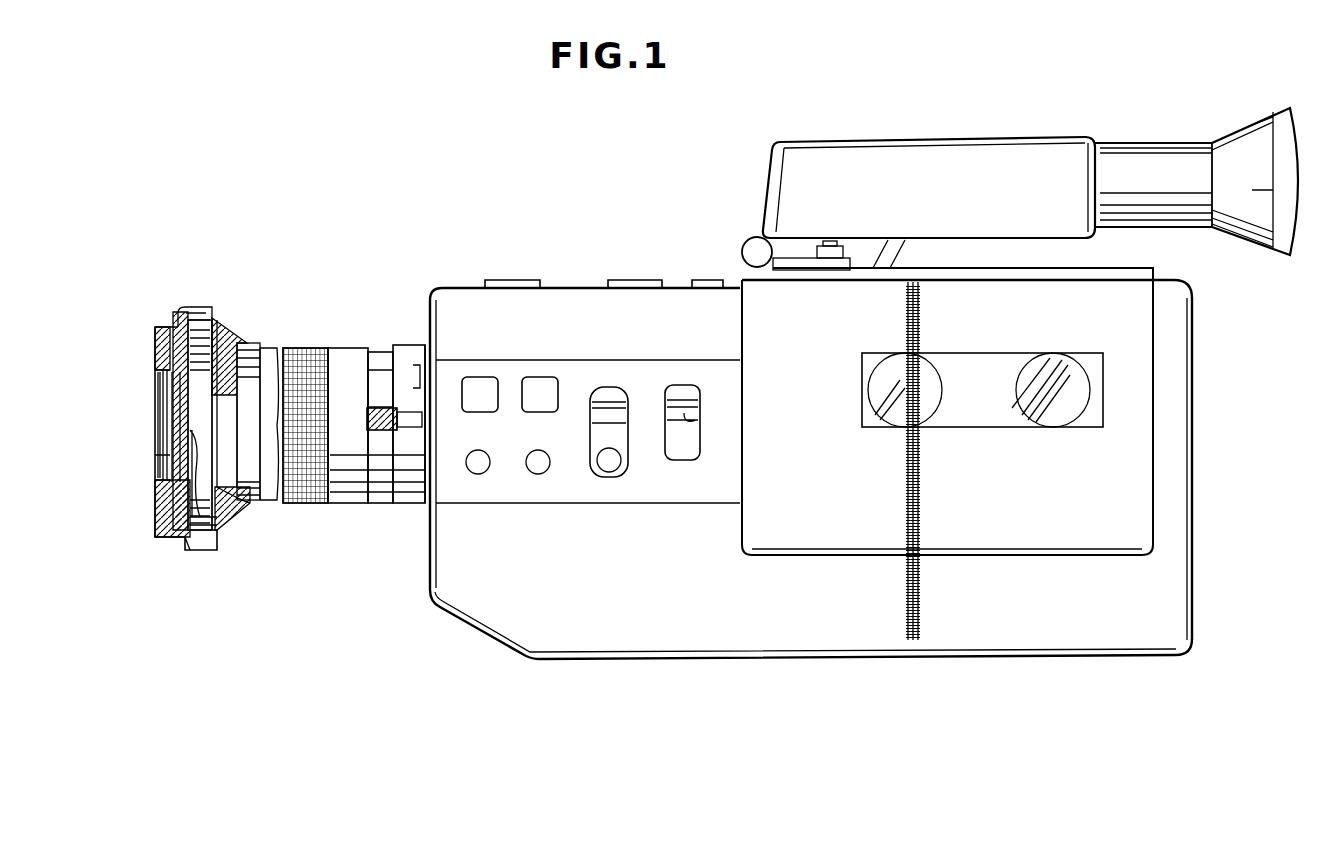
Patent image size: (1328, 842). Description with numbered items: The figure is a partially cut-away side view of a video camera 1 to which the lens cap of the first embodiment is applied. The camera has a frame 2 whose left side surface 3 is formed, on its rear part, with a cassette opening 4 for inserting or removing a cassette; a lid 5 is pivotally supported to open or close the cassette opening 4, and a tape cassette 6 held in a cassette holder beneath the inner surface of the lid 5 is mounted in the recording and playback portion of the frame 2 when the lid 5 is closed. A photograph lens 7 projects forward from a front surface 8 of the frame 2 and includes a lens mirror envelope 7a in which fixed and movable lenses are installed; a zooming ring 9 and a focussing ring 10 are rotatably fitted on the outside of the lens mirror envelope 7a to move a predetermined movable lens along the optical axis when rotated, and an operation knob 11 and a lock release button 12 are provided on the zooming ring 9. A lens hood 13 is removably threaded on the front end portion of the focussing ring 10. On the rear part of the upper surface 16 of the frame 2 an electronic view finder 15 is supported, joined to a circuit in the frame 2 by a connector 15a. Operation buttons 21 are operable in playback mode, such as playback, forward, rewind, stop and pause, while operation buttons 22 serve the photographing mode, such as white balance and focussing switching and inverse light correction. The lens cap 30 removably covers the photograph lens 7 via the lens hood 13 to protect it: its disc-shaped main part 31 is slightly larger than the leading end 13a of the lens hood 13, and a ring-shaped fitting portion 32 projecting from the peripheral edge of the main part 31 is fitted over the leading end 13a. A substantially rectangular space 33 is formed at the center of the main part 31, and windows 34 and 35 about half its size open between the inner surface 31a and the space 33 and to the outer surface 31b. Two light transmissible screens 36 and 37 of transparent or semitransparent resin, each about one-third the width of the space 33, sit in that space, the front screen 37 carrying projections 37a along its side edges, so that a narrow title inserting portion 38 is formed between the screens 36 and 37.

The video camera 1 is at (498, 201).
The frame 2 is at (452, 297).
The left side surface 3 is at (805, 637).
The cassette opening 4 is at (1150, 488).
The lid 5 is at (1125, 527).
The tape cassette 6 is at (1080, 392).
The photograph lens 7 is at (358, 347).
The lens mirror envelope 7a is at (385, 505).
The front surface 8 is at (428, 570).
The zooming ring 9 is at (432, 480).
The focussing ring 10 is at (343, 505).
The operation knob 11 is at (383, 432).
The lock release button 12 is at (412, 505).
The lens hood 13 is at (228, 325).
The leading end 13a is at (197, 310).
The electronic view finder 15 is at (1000, 142).
The connector 15a is at (905, 250).
The upper surface 16 is at (575, 283).
The operation buttons 21 is at (706, 278).
The operation buttons 22 is at (480, 385).
The lens cap 30 is at (147, 343).
The main part 31 is at (155, 357).
The inner surface 31a is at (238, 340).
The outer surface 31b is at (153, 360).
The fitting portion 32 is at (207, 316).
The space 33 is at (163, 457).
The window 34 is at (235, 523).
The window 35 is at (152, 463).
The light transmissible screen 36 is at (167, 392).
The light transmissible screen 37 is at (163, 405).
The projections 37a is at (172, 373).
The title inserting portion 38 is at (165, 435).